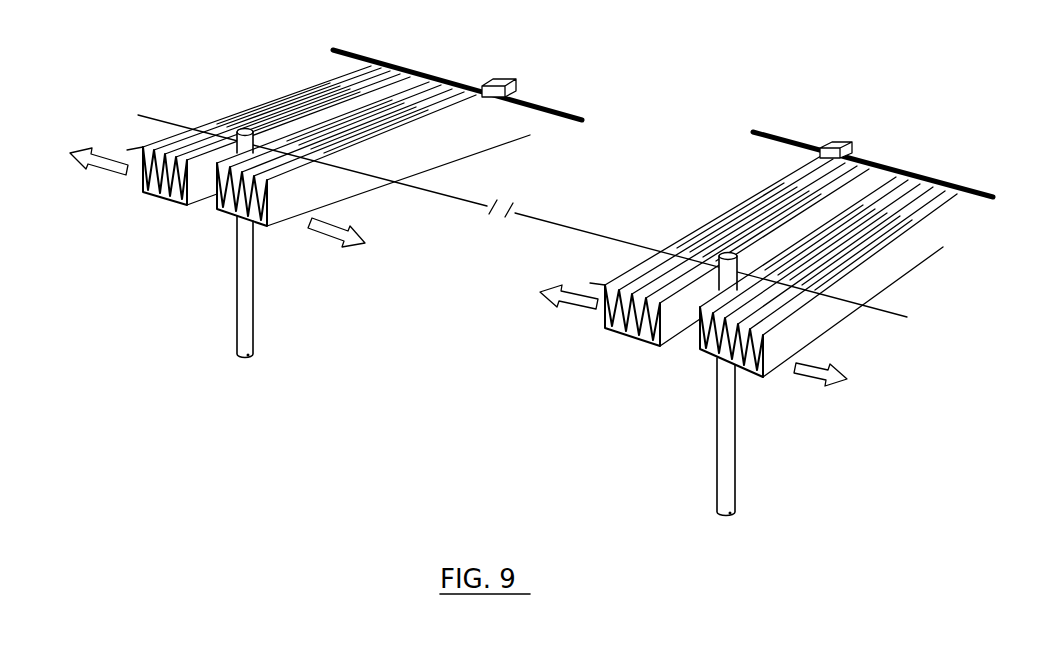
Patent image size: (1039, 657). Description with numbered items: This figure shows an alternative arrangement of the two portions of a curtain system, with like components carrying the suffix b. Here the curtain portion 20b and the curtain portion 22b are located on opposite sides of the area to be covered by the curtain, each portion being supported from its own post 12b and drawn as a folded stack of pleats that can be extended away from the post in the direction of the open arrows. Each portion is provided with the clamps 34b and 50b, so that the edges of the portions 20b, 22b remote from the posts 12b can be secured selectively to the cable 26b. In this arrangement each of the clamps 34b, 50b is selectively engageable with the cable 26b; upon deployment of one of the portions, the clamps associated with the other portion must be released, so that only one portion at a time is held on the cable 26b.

The post 12b is at (247, 291).
The portion of the curtain 20b is at (290, 222).
The portion of the curtain 22b is at (645, 337).
The cable 26b is at (940, 177).
The clamp 34b is at (517, 86).
The clamp 50b is at (834, 141).